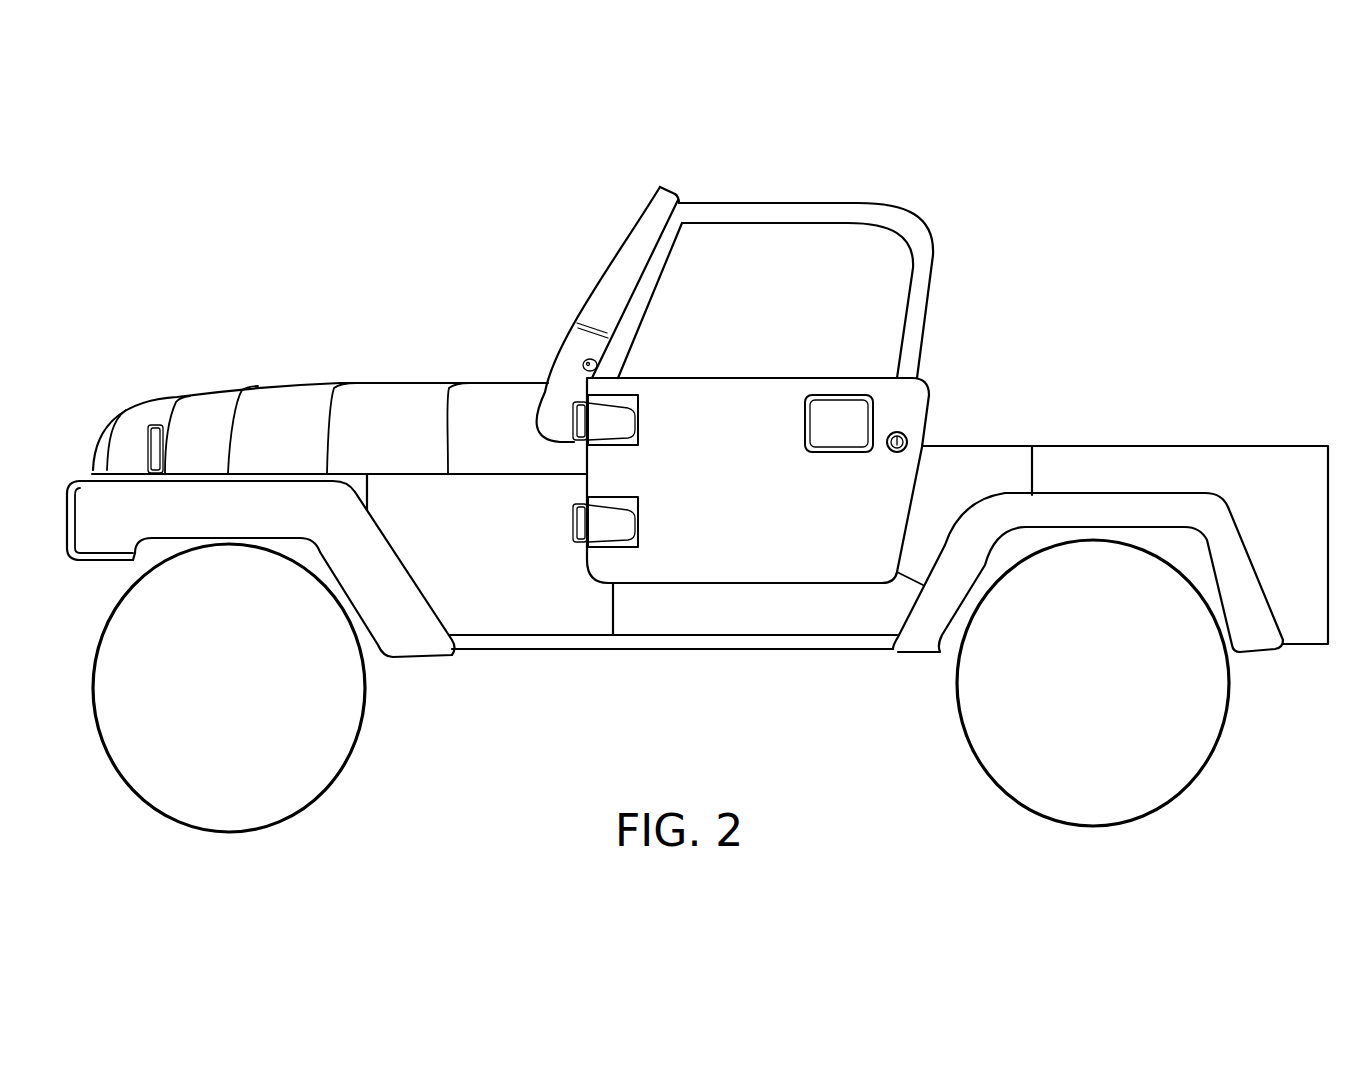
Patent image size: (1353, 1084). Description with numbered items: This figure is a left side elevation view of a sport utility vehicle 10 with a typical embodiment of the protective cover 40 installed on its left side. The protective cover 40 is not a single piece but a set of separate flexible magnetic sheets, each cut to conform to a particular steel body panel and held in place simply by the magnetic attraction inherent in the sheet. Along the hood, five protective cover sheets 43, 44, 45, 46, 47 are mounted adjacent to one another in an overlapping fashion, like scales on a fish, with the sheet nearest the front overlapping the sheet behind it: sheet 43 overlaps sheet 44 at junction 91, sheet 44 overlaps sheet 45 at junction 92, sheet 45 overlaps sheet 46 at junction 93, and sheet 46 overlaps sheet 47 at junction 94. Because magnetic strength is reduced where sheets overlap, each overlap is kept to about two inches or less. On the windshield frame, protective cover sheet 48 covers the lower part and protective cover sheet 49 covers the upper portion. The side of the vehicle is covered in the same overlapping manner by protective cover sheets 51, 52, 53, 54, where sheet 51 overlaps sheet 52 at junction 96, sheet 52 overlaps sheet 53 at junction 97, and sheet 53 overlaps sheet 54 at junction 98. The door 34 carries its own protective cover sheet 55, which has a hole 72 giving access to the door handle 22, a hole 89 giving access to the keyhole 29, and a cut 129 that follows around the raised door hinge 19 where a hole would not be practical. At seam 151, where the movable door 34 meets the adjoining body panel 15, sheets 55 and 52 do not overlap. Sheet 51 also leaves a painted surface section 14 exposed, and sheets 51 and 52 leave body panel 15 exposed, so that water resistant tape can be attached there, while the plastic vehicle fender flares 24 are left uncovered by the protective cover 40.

The vehicle 10 is at (697, 480).
The protective cover 40 is at (591, 310).
The protective cover sheet 49 is at (608, 290).
The protective cover sheet 48 is at (568, 365).
The door 34 is at (922, 293).
The protective cover sheet 43 is at (140, 412).
The protective cover sheet 44 is at (210, 407).
The protective cover sheet 45 is at (290, 400).
The protective cover sheet 46 is at (398, 400).
The protective cover sheet 47 is at (503, 398).
The junction 91 is at (172, 400).
The junction 92 is at (243, 392).
The junction 93 is at (332, 388).
The junction 94 is at (443, 392).
The painted surface section 14 is at (355, 487).
The plastic vehicle fender flares 24 is at (403, 632).
The protective cover sheet 51 is at (510, 612).
The body panel 15 is at (665, 643).
The protective cover sheet 52 is at (751, 617).
The junction 96 is at (612, 608).
The seam 151 is at (830, 585).
The protective cover sheet 55 is at (782, 445).
The door handle 22 is at (833, 417).
The hole 72 is at (862, 415).
The keyhole 29 is at (896, 430).
The hole 89 is at (912, 432).
The raised door hinge 19 is at (611, 415).
The cut 129 is at (641, 407).
The protective cover sheet 53 is at (965, 465).
The junction 98 is at (1032, 464).
The protective cover sheet 54 is at (1137, 465).
The junction 97 is at (898, 571).